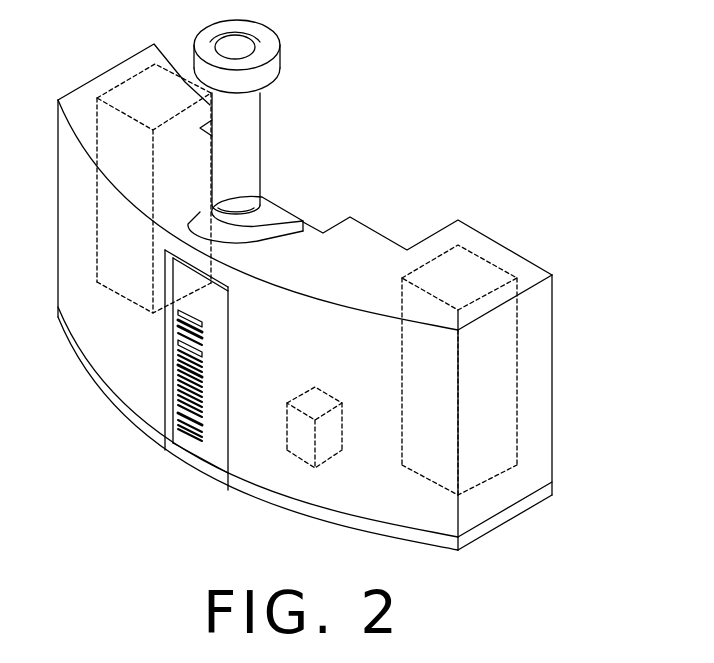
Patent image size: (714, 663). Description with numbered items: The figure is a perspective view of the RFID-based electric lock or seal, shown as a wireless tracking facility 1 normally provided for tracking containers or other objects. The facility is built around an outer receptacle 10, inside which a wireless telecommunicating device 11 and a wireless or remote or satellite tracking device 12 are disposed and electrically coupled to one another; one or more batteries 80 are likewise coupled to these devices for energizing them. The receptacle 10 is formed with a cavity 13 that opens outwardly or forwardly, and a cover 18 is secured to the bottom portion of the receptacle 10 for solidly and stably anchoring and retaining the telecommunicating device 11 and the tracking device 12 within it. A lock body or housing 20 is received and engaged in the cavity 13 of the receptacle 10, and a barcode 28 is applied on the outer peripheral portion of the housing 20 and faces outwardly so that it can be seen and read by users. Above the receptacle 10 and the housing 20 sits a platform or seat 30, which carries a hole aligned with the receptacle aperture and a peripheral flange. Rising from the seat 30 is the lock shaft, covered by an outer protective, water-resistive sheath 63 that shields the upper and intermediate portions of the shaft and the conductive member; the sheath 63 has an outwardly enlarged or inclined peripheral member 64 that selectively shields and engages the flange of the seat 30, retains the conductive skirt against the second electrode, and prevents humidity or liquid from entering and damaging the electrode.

The wireless tracking facility 1 is at (524, 208).
The receptacle 10 is at (545, 317).
The wireless telecommunicating device 11 is at (477, 467).
The satellite tracking device 12 is at (120, 98).
The cavity 13 is at (175, 352).
The cover 18 is at (425, 540).
The housing 20 is at (208, 443).
The barcode 28 is at (190, 425).
The seat 30 is at (283, 220).
The sheath 63 is at (252, 105).
The peripheral member 64 is at (270, 203).
The battery 80 is at (302, 448).